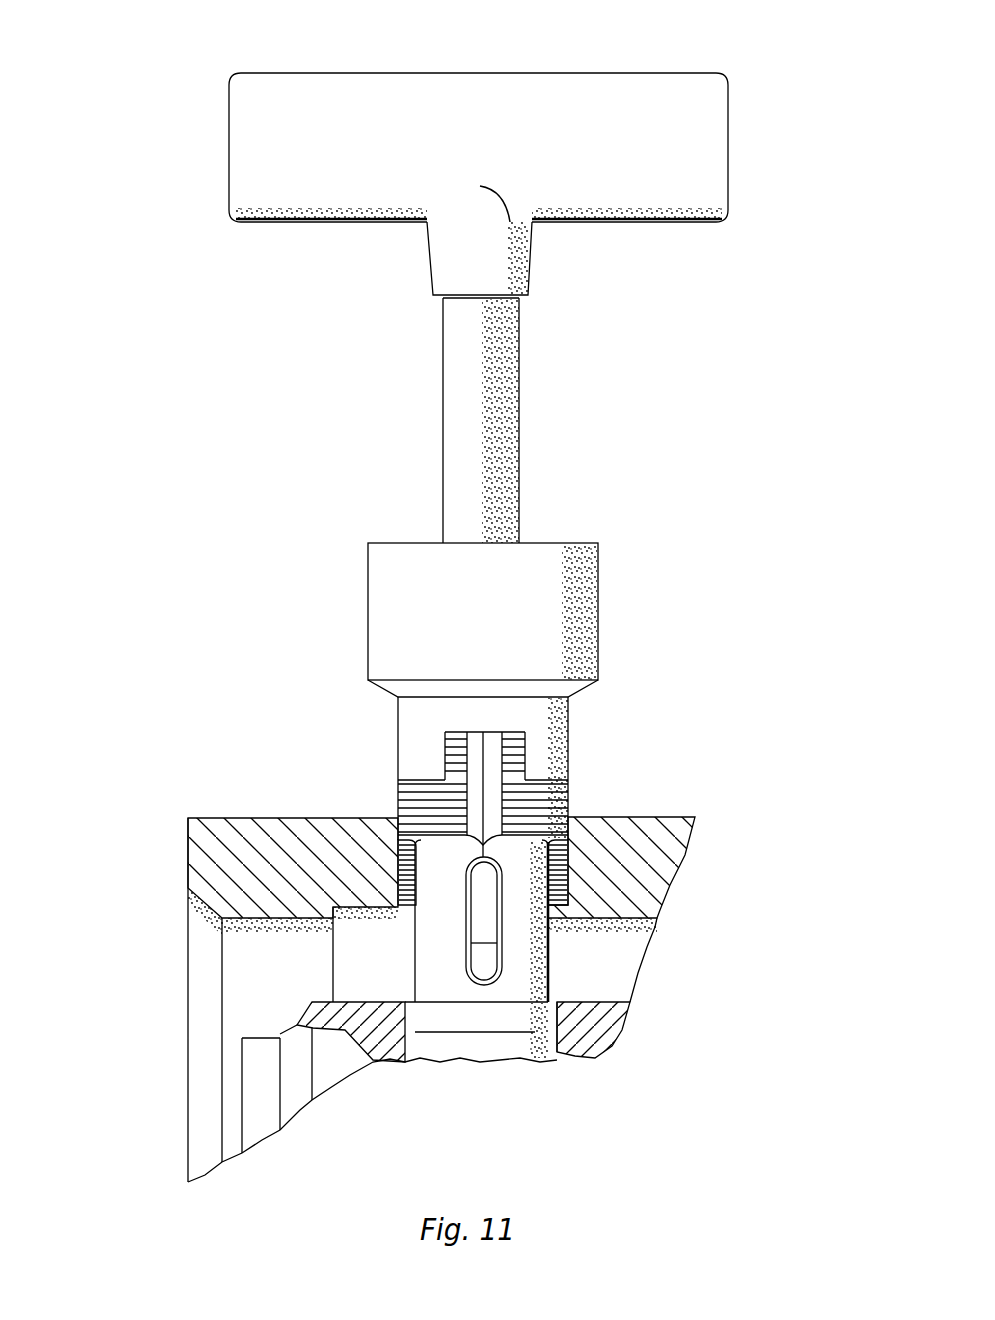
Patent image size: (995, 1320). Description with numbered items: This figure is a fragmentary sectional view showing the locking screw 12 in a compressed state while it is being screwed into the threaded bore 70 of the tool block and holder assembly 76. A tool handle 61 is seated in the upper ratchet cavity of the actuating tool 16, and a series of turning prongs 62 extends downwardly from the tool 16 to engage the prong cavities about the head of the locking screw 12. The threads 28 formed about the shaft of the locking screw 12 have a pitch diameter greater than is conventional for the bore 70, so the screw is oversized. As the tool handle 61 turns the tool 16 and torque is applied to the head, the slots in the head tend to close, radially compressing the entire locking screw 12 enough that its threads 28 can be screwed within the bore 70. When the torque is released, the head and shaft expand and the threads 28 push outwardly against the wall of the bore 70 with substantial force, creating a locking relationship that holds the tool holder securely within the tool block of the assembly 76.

The tool handle 61 is at (637, 97).
The actuating tool 16 is at (630, 583).
The turning prongs 62 is at (410, 755).
The threads 28 is at (568, 800).
The threaded bore 70 is at (398, 845).
The tool block and holder assembly 76 is at (177, 898).
The locking screw 12 is at (560, 957).